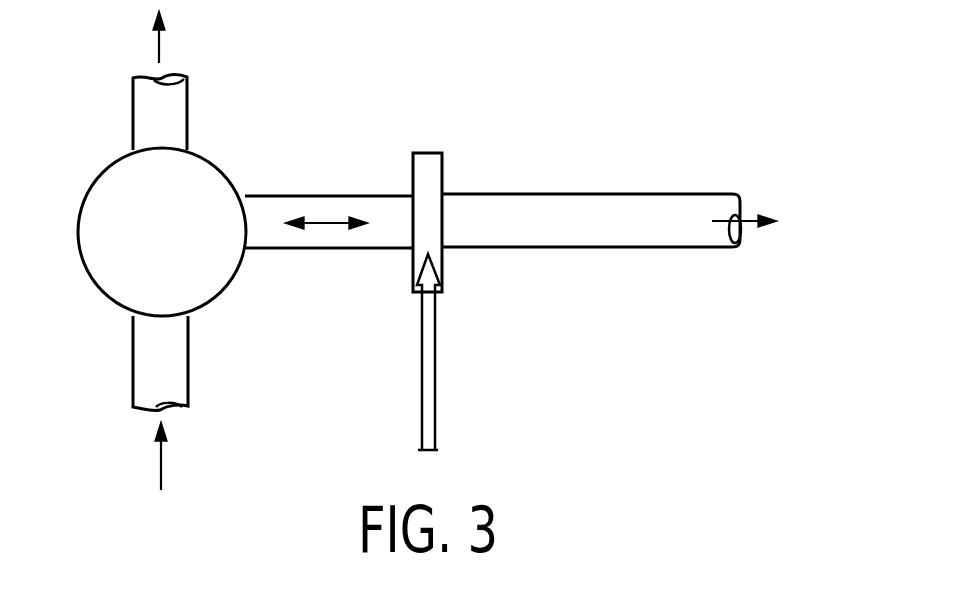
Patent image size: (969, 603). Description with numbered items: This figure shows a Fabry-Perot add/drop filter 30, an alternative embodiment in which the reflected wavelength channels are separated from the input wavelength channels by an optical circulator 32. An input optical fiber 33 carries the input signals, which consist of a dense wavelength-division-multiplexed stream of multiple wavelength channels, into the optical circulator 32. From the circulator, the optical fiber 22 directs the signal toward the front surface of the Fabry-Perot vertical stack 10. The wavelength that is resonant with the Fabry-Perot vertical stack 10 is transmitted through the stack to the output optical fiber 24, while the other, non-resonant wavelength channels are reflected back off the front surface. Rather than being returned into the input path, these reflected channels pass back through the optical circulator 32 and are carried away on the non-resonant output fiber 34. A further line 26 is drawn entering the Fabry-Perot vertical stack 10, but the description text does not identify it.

The Fabry-Perot vertical stack 10 is at (426, 170).
The input optical fiber 22 is at (316, 192).
The output optical fiber 24 is at (584, 193).
The inlet arrow / supply line 26 is at (436, 363).
The Fabry-Perot add/drop filter 30 is at (717, 131).
The optical circulator 32 is at (118, 281).
The input optical fiber 33 is at (190, 362).
The non-resonant output fiber 34 is at (188, 106).